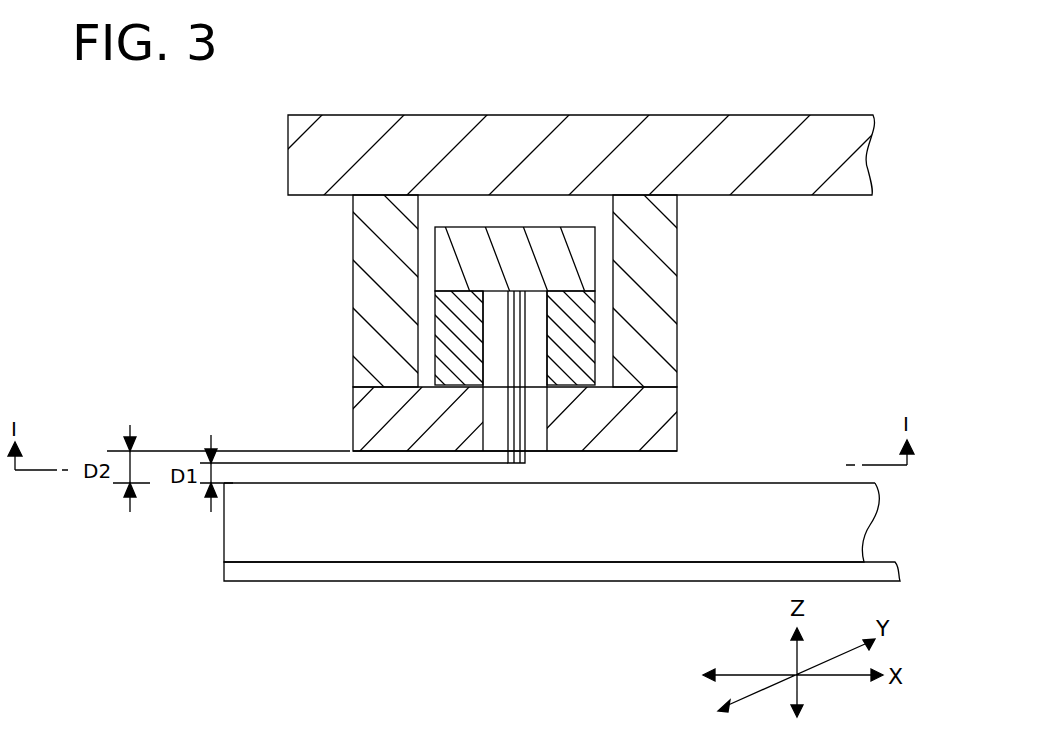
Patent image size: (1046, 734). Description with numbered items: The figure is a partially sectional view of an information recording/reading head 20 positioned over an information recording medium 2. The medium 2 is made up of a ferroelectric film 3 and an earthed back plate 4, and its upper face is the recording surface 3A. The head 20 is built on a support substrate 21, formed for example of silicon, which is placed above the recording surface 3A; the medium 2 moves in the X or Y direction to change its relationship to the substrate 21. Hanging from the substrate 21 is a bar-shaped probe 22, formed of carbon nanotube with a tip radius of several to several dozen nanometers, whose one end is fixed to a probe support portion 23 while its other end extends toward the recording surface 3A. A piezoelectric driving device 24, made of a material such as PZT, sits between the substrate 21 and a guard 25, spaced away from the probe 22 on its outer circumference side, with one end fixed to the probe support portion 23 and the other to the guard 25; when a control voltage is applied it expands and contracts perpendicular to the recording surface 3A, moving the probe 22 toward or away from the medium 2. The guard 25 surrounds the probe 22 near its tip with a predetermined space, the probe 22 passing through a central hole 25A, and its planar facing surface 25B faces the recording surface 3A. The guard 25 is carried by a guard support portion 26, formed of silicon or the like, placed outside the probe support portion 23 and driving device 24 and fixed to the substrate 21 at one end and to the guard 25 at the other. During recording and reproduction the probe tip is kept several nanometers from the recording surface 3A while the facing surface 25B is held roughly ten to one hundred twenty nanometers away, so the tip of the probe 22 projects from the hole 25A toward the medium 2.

The information recording medium 2 is at (380, 591).
The ferroelectric film 3 is at (224, 533).
The recording surface 3A is at (735, 483).
The back plate 4 is at (280, 575).
The information recording/reading head 20 is at (818, 86).
The support substrate 21 is at (290, 155).
The probe 22 is at (517, 465).
The probe support portion 23 is at (440, 262).
The piezoelectric driving device 24 is at (597, 343).
The guard 25 is at (353, 422).
The hole 25A is at (543, 433).
The facing surface 25B is at (660, 453).
The guard support portion 26 is at (672, 254).